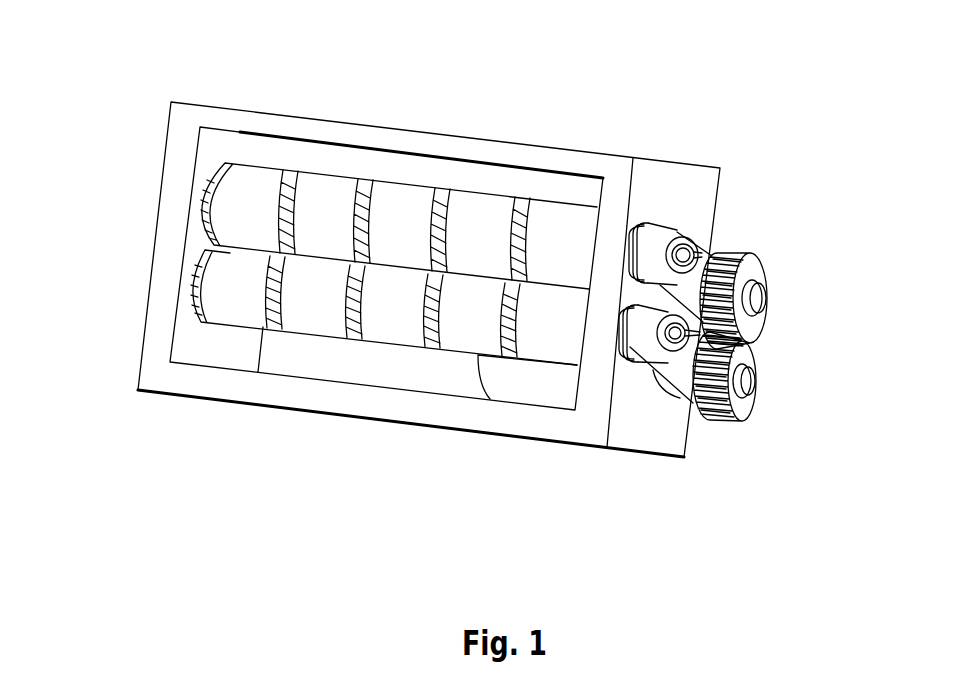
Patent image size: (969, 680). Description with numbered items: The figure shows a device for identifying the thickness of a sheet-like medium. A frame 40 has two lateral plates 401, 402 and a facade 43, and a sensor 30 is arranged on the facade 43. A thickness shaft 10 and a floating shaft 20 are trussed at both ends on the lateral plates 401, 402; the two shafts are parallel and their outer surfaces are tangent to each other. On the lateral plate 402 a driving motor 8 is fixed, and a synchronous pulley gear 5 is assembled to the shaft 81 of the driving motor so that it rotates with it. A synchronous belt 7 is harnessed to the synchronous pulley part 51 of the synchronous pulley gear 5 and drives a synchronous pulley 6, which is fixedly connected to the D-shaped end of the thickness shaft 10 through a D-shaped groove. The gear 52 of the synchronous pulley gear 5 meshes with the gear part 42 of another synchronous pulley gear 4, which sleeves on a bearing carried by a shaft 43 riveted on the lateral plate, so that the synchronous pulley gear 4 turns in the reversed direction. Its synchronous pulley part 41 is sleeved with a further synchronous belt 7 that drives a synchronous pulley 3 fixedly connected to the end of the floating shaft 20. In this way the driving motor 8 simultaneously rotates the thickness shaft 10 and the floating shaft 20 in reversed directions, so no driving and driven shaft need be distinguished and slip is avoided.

The frame 40 is at (172, 101).
The lateral plate 401 is at (157, 236).
The lateral plate 402 is at (662, 187).
The sensor 30 is at (330, 143).
The floating shaft 20 is at (230, 208).
The thickness shaft 10 is at (230, 288).
The driving motor 8 is at (518, 377).
The facade 43 is at (457, 150).
The synchronous pulley 3 is at (673, 232).
The synchronous pulley 6 is at (680, 353).
The synchronous belt 7 is at (710, 240).
The synchronous pulley part 41 is at (707, 250).
The gear part 42 is at (753, 252).
The synchronous pulley gear 4 is at (822, 206).
The shaft of the driving motor 81 is at (750, 380).
The synchronous pulley part 51 is at (682, 403).
The gear 52 is at (722, 415).
The synchronous pulley gear 5 is at (812, 467).